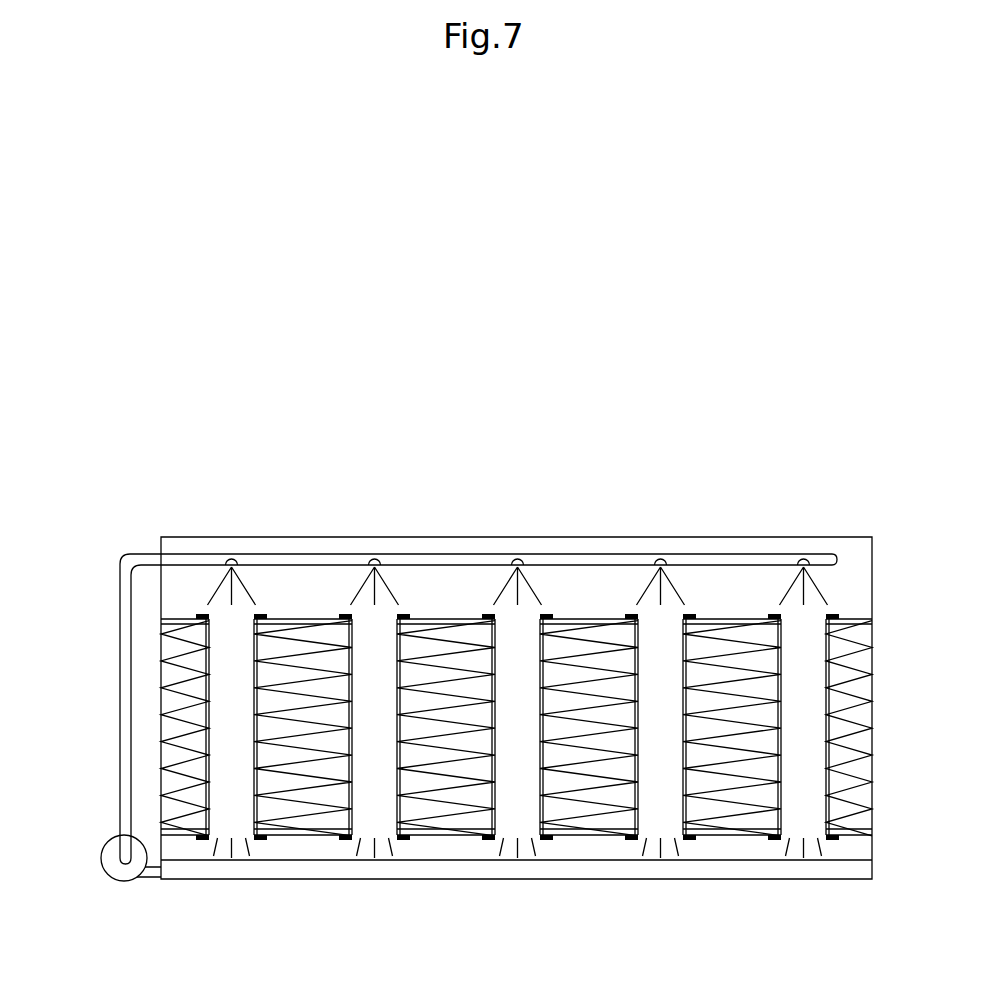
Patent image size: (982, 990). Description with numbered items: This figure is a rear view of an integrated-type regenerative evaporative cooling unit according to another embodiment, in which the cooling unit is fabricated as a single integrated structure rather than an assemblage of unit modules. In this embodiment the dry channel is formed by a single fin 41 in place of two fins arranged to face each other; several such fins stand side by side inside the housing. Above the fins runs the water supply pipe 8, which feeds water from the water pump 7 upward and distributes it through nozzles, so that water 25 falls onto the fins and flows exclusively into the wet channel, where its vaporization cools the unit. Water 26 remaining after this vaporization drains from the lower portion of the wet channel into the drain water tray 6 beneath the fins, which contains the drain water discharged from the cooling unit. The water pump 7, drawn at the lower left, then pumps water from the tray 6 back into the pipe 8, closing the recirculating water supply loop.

The drain water tray 6 is at (520, 875).
The water pump 7 is at (112, 850).
The water supply pipe 8 is at (119, 581).
The water 25 is at (392, 588).
The water 26 is at (640, 852).
The single fin 41 is at (566, 620).